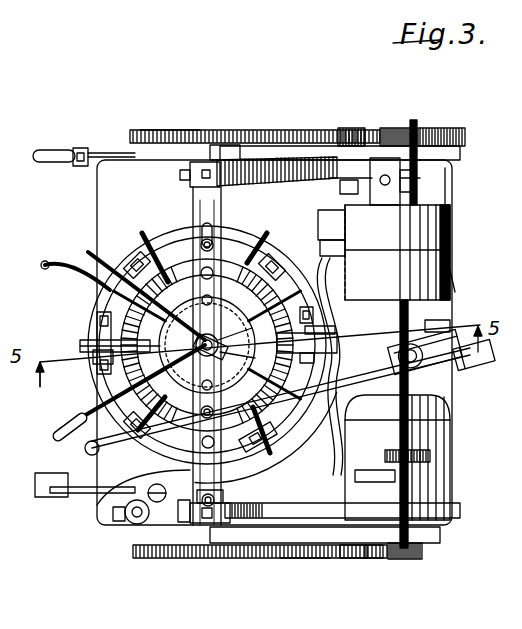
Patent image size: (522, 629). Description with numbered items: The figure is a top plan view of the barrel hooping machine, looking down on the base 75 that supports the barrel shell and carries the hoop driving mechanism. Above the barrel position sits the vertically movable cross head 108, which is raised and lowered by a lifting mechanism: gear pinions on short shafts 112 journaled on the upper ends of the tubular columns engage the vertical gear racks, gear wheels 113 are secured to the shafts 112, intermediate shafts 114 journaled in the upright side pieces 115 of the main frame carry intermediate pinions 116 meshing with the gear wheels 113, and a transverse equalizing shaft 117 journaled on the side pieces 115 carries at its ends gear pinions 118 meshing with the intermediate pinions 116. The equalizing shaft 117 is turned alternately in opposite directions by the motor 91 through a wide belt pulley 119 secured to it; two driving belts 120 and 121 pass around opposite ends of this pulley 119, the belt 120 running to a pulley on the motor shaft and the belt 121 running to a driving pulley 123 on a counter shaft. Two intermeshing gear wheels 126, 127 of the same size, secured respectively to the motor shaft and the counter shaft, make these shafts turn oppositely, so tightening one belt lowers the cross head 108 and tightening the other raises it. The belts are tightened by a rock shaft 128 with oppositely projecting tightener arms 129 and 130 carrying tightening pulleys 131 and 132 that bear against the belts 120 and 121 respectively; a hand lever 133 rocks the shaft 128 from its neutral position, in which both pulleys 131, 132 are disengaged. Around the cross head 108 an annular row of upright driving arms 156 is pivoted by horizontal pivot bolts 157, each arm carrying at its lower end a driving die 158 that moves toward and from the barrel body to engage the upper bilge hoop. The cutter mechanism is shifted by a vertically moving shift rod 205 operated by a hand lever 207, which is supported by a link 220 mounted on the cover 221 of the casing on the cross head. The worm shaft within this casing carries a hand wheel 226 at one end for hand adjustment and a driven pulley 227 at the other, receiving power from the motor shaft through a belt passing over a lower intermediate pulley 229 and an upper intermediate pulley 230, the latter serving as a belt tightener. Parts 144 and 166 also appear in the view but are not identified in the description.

The base 75 is at (274, 342).
The motor 91 is at (446, 468).
The cross head 108 is at (92, 260).
The short shafts 112 is at (225, 130).
The gear wheels 113 is at (172, 130).
The intermediate shafts 114 is at (345, 128).
The upright side pieces 115 is at (355, 160).
The intermediate gear wheel pinions 116 is at (388, 128).
The transverse equalizing shaft 117 is at (413, 122).
The gear pinions 118 is at (422, 128).
The wide belt pulley 119 is at (397, 252).
The driving belt 120 is at (402, 252).
The driving belt 121 is at (397, 252).
The driving pulley 123 is at (301, 308).
The gear wheel 126 is at (420, 185).
The gear wheel 127 is at (340, 187).
The rock shaft 128 is at (317, 327).
The tightener arm 129 is at (448, 322).
The tightener arm 130 is at (322, 258).
The tightening pulley 131 is at (452, 282).
The tightening pulley 132 is at (331, 233).
The hand lever 133 is at (98, 144).
The contact finger 144 is at (97, 316).
The driving arms 156 is at (150, 237).
The pivot bolt 157 is at (95, 342).
The driving die 158 is at (90, 455).
The operating lever 166 is at (68, 420).
The shift rod 205 is at (58, 376).
The hand lever 207 is at (45, 265).
The link 220 is at (212, 354).
The cover 221 is at (224, 344).
The hand wheel 226 is at (213, 343).
The driven pulley 227 is at (290, 394).
The lower intermediate pulley 229 is at (406, 351).
The upper intermediate pulley 230 is at (472, 368).